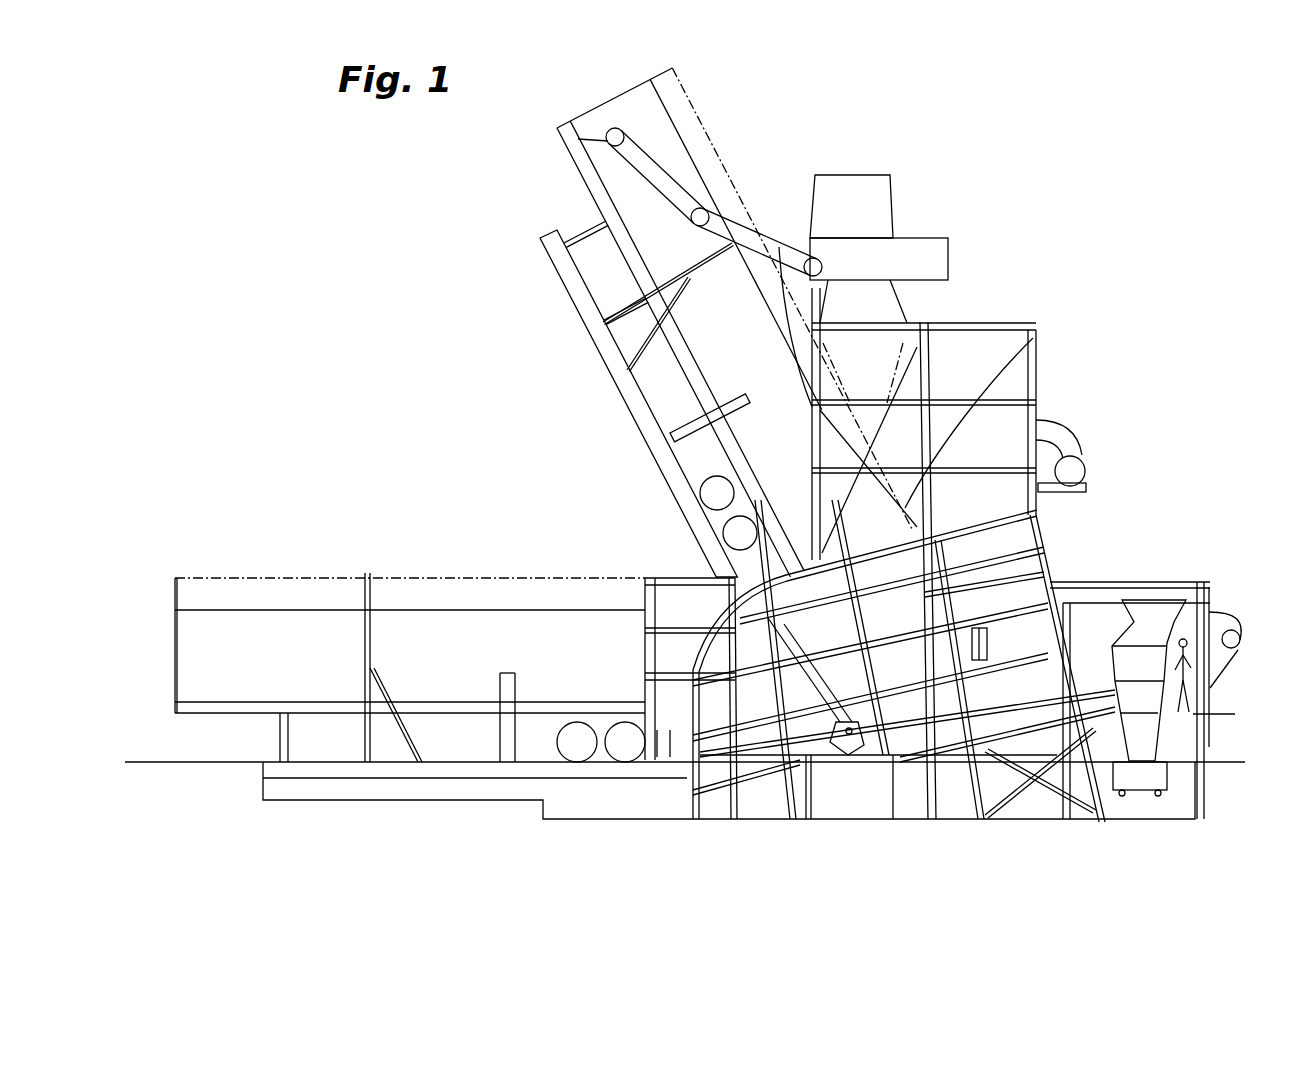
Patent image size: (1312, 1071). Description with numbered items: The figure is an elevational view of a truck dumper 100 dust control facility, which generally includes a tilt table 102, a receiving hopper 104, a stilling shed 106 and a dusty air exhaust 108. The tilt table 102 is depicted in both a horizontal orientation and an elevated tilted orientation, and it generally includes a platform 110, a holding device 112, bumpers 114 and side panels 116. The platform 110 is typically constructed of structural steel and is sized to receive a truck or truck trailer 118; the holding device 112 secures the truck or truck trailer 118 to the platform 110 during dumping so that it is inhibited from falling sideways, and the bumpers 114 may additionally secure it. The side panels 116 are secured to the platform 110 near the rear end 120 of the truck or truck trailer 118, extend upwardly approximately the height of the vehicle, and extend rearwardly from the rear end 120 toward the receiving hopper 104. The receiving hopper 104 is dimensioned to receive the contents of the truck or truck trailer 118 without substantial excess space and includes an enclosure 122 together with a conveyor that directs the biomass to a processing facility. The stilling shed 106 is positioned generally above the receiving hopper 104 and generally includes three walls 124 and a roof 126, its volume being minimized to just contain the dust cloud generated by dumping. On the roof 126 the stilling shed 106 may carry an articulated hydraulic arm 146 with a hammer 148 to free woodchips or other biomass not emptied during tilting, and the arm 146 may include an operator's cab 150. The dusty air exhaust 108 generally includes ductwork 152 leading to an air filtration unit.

The truck dumper 100 is at (372, 327).
The tilt table 102 is at (542, 248).
The receiving hopper 104 is at (1047, 548).
The stilling shed 106 is at (1038, 390).
The dusty air exhaust 108 is at (1082, 445).
The platform 110 is at (578, 316).
The holding device 112 is at (668, 470).
The bumpers 114 is at (600, 345).
The side panels 116 is at (1037, 341).
The truck or truck trailer 118 is at (610, 100).
The rear end 120 is at (600, 605).
The enclosure 122 is at (1040, 566).
The walls 124 is at (999, 344).
The roof 126 is at (970, 323).
The articulated hydraulic arm 146 is at (778, 246).
The hammer 148 is at (575, 125).
The operator's cab 150 is at (893, 195).
The ductwork 152 is at (1075, 470).